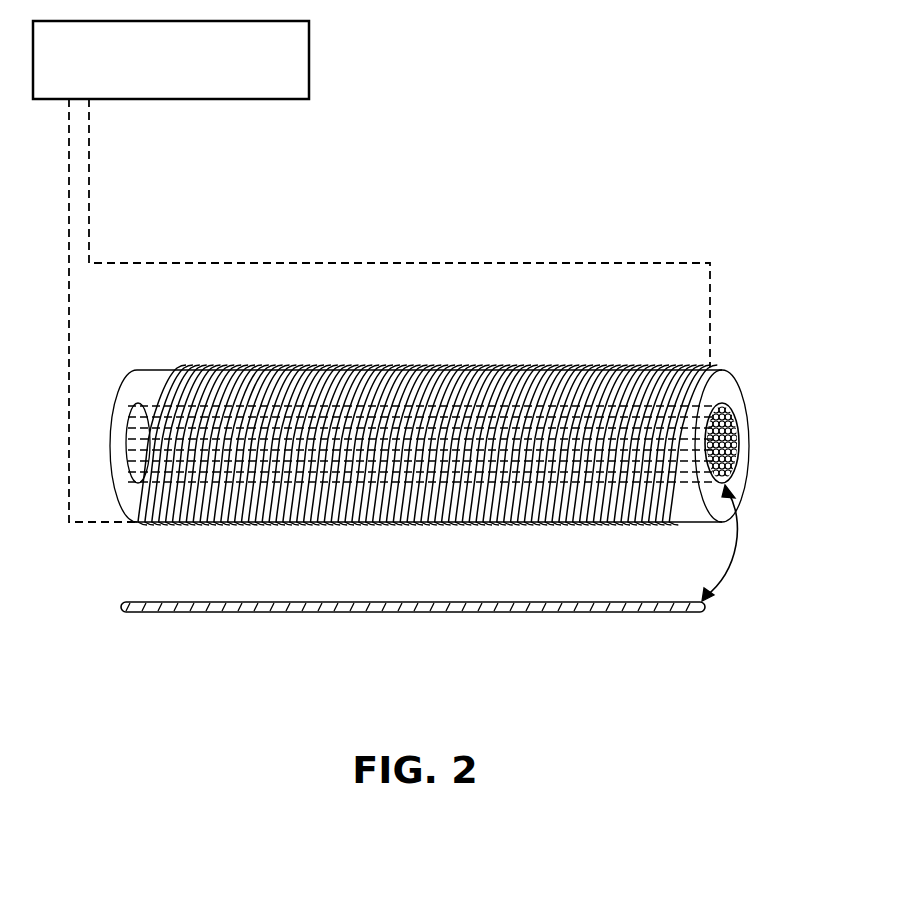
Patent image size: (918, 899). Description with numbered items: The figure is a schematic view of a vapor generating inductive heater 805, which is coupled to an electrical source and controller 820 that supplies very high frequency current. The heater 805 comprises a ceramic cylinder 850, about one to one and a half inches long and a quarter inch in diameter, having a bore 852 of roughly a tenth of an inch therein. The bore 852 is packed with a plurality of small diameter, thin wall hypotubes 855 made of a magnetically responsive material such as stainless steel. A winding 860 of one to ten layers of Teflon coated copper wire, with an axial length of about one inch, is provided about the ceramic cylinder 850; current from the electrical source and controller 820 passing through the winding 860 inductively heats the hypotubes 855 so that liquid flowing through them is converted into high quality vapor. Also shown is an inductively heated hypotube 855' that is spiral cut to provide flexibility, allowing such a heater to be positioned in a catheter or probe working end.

The electrical source and controller 820 is at (154, 91).
The vapor generating inductive heater 805 is at (598, 226).
The ceramic cylinder 850 is at (141, 378).
The bore 852 is at (735, 400).
The hypotubes 855 is at (462, 428).
The spiral cut hypotube 855' is at (429, 548).
The winding 860 is at (437, 369).